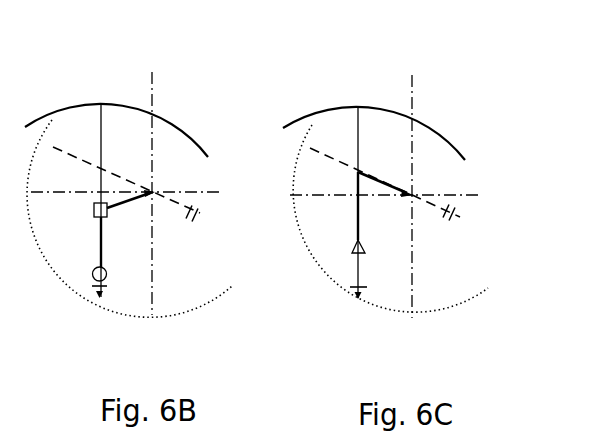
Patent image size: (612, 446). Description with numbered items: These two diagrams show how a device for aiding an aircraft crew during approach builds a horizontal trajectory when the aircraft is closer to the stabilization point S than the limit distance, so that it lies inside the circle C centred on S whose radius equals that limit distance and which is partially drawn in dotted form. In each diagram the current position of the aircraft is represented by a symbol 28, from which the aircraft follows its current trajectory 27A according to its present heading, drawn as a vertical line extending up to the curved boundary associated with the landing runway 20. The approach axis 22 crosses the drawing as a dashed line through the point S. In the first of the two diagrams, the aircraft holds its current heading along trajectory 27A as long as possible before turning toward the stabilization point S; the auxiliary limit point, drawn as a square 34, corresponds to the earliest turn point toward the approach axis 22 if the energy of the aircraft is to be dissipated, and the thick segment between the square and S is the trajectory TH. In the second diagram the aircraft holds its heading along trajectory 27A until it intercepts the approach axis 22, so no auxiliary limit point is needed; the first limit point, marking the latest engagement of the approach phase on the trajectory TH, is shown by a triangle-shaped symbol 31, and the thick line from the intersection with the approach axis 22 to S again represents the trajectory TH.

In FIG. 6B, the landing runway 20 is at (207, 193).
In FIG. 6C, the landing runway 20 is at (462, 196).
In FIG. 6B, the approach axis 22 is at (70, 148).
In FIG. 6B, the current trajectory 27A is at (101, 134).
In FIG. 6C, the current trajectory 27A is at (358, 138).
In FIG. 6B, the symbol 28 is at (99, 297).
In FIG. 6C, the symbol 28 is at (358, 294).
In FIG. 6C, the symbol 31 is at (355, 248).
In FIG. 6B, the square 34 is at (94, 211).
In FIG. 6B, the trajectory TH is at (110, 234).
In FIG. 6C, the trajectory TH is at (370, 220).
In FIG. 6C, the stabilization point S is at (414, 188).
In FIG. 6B, the circle C is at (188, 312).
In FIG. 6C, the circle C is at (445, 313).